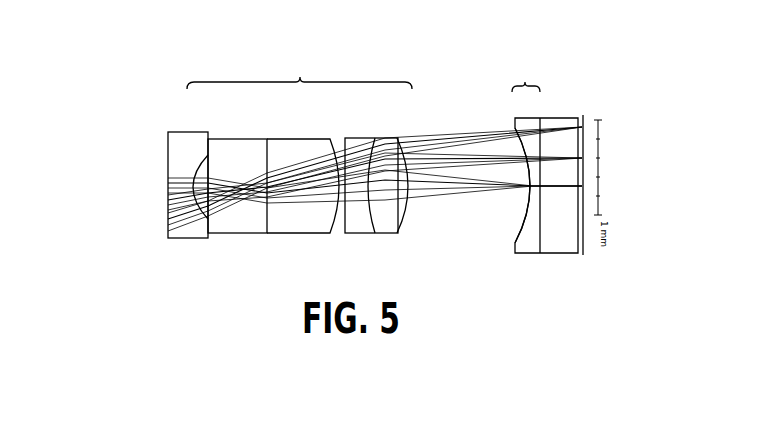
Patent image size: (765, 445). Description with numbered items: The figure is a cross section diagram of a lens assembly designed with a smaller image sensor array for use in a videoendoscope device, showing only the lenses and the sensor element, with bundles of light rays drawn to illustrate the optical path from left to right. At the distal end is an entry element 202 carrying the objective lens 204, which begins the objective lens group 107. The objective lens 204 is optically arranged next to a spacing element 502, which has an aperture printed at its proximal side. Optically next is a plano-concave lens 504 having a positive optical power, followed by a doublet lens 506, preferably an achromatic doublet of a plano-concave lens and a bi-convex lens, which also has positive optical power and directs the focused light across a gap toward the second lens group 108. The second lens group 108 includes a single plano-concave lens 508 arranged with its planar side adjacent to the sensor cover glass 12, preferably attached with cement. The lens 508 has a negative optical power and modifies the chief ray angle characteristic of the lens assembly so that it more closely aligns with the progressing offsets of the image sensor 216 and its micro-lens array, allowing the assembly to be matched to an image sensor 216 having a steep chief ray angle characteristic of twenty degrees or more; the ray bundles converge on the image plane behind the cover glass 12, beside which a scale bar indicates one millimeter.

The sensor cover glass 12 is at (558, 240).
The objective lens group 107 is at (299, 73).
The second lens group 108 is at (529, 76).
The optical window element 202 is at (164, 130).
The objective lens 204 is at (185, 170).
The image sensor 216 is at (584, 123).
The spacing element 502 is at (250, 147).
The plano-concave lens 504 is at (298, 140).
The doublet lens 506 is at (362, 142).
The plano-concave lens 508 is at (524, 128).